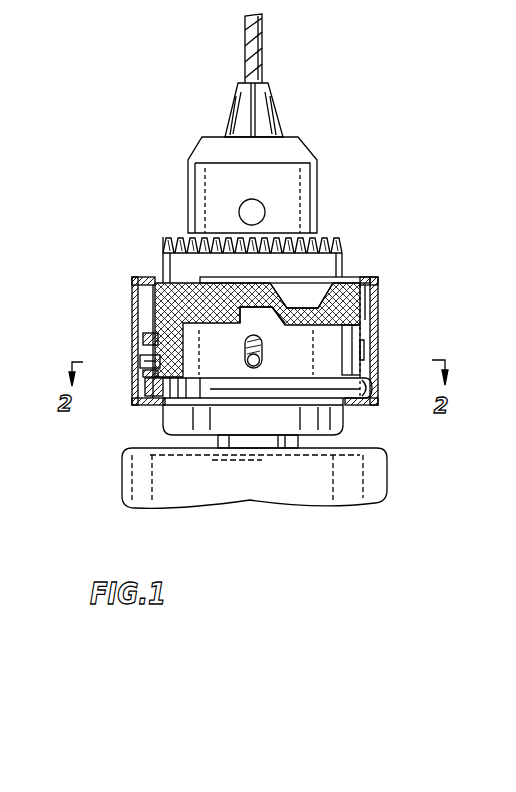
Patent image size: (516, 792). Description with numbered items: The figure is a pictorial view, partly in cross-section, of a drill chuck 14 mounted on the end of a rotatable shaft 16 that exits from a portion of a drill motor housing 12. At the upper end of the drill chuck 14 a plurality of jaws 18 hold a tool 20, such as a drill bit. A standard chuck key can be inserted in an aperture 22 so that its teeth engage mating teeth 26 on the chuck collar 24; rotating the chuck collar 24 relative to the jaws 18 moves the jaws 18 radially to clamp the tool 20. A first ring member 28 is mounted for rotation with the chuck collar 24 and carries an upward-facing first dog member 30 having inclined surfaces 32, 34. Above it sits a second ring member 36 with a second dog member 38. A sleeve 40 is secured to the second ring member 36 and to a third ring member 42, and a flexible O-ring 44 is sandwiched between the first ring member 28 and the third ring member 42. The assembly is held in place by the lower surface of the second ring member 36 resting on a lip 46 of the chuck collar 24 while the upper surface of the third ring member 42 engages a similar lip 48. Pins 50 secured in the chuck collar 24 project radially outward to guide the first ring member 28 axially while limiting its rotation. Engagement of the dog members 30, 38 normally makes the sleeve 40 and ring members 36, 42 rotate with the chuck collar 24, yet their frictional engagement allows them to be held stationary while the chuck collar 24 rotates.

The drill motor housing 12 is at (370, 482).
The drill chuck 14 is at (91, 252).
The rotatable shaft 16 is at (288, 438).
The jaws 18 is at (265, 107).
The tool 20 is at (260, 34).
The aperture 22 is at (266, 215).
The chuck collar 24 is at (163, 264).
The mating teeth 26 is at (323, 238).
The first ring member 28 is at (346, 347).
The first dog member 30 is at (243, 313).
The inclined surface 32 is at (232, 315).
The inclined surface 34 is at (287, 314).
The second ring member 36 is at (371, 278).
The second dog member 38 is at (358, 278).
The sleeve 40 is at (134, 374).
The third ring member 42 is at (357, 399).
The O-ring 44 is at (366, 388).
The lip 46 is at (352, 295).
The lip 48 is at (162, 407).
The pins 50 is at (245, 357).